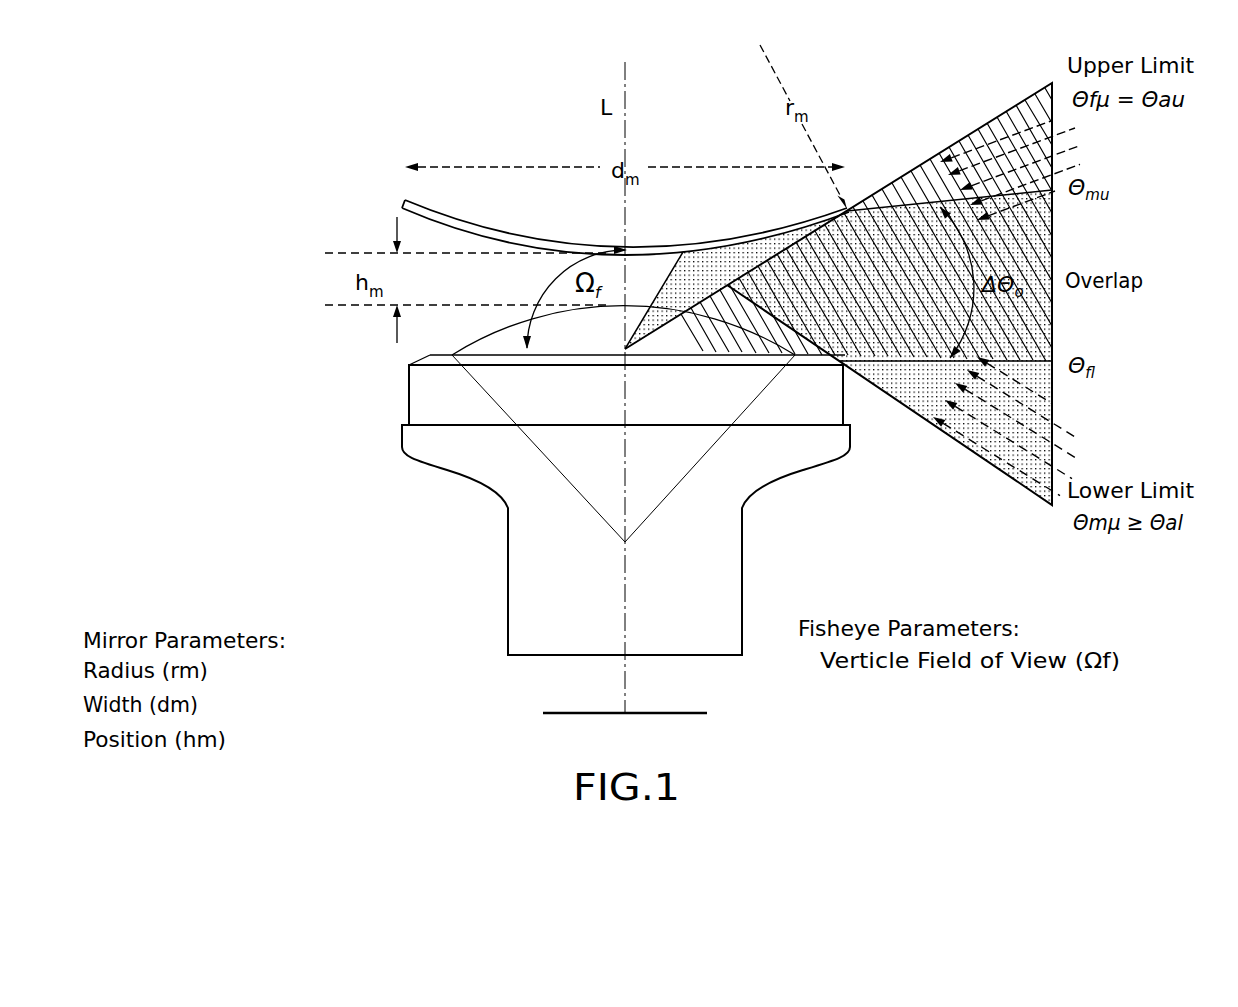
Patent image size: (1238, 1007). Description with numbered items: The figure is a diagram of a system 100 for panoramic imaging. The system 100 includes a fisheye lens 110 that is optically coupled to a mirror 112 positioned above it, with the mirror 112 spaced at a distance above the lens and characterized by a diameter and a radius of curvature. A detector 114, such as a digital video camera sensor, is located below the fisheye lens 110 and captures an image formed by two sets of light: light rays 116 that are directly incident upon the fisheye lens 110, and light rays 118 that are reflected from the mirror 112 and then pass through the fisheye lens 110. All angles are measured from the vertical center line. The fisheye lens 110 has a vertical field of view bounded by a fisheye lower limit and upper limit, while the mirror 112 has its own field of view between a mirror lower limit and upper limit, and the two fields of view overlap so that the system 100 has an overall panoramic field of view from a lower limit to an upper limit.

The system for panoramic imaging 100 is at (639, 59).
The fisheye lens 110 is at (365, 365).
The mirror 112 is at (365, 225).
The detector 114 is at (518, 713).
The light rays 116 is at (1068, 170).
The light rays 118 is at (1064, 426).